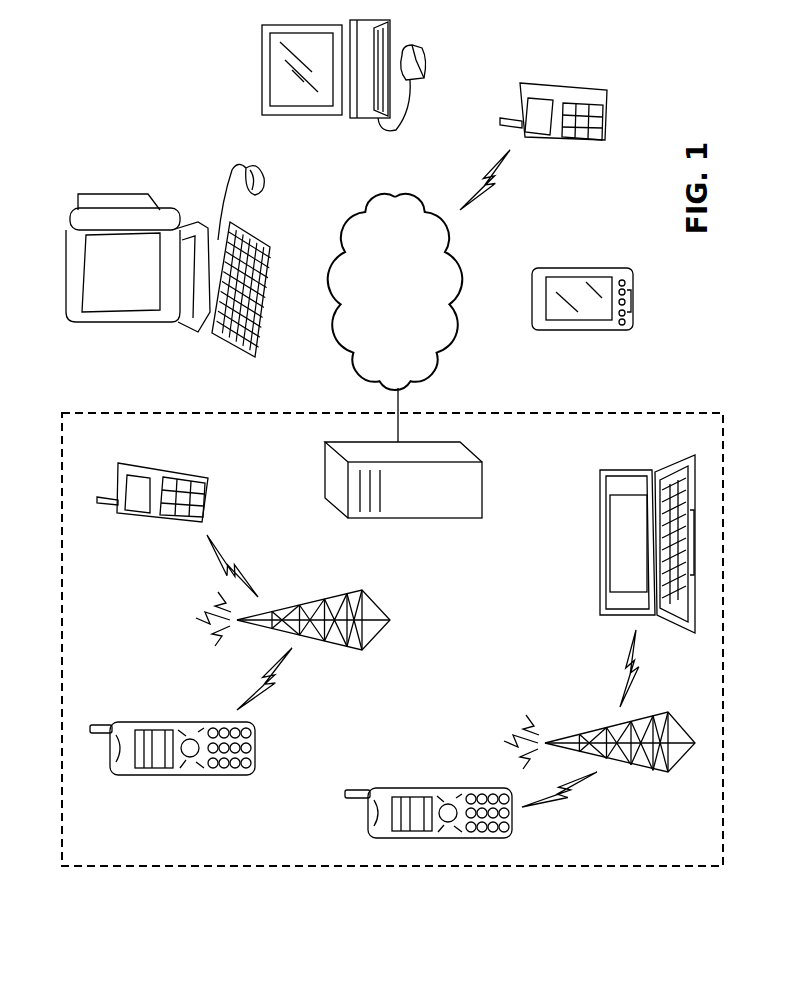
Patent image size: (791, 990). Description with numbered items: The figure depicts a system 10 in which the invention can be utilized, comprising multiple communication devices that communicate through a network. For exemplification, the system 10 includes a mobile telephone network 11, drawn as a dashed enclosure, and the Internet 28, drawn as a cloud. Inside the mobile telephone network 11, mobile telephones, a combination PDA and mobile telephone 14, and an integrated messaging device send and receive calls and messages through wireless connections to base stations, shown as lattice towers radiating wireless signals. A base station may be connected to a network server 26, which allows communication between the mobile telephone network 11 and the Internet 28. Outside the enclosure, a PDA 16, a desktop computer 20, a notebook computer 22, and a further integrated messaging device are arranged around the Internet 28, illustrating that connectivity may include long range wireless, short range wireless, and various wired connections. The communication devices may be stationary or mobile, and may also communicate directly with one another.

The system 10 is at (484, 60).
The mobile telephone network 11 is at (99, 855).
The combination PDA and mobile telephone 14 is at (603, 540).
The PDA 16 is at (578, 268).
The desktop computer 20 is at (117, 193).
The notebook computer 22 is at (262, 65).
The network server 26 is at (413, 518).
The Internet 28 is at (340, 262).